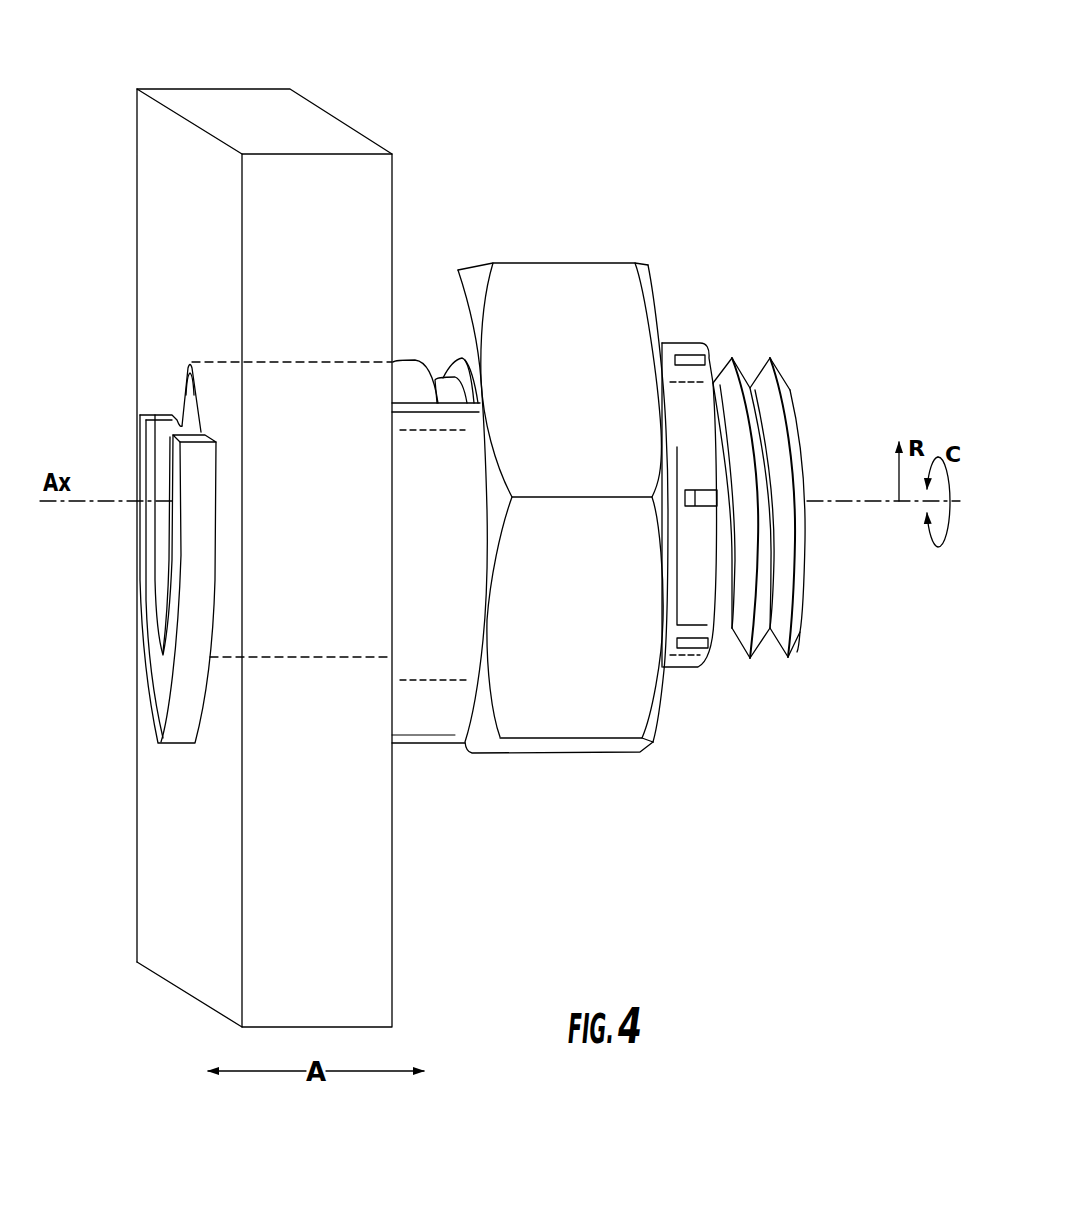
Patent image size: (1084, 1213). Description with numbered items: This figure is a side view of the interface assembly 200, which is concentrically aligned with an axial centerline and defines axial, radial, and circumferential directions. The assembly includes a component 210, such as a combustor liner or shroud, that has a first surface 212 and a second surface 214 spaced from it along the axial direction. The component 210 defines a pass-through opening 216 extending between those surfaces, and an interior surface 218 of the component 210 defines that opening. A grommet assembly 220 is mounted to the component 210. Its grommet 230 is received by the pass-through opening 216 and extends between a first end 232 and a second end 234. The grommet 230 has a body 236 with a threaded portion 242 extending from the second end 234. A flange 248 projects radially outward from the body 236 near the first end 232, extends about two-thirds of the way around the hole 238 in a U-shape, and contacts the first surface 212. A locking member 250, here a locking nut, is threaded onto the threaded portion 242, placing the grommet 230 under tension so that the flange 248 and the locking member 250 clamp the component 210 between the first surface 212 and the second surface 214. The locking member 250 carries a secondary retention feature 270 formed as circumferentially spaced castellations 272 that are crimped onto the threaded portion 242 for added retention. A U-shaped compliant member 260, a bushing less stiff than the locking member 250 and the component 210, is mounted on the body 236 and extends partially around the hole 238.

The interface assembly 200 is at (691, 121).
The component 210 is at (231, 89).
The first surface 212 is at (164, 181).
The second surface 214 is at (344, 112).
The pass-through opening 216 is at (313, 637).
The interior surface 218 is at (191, 360).
The grommet assembly 220 is at (524, 233).
The grommet 230 is at (437, 357).
The first end 232 is at (176, 758).
The second end 234 is at (790, 688).
The body 236 is at (400, 378).
The hole 238 is at (166, 533).
The threaded portion 242 is at (400, 354).
The flange 248 is at (160, 680).
The locking member 250 is at (593, 720).
The compliant member 260 is at (447, 724).
The secondary retention feature 270 is at (687, 342).
The castellations 272 is at (697, 410).